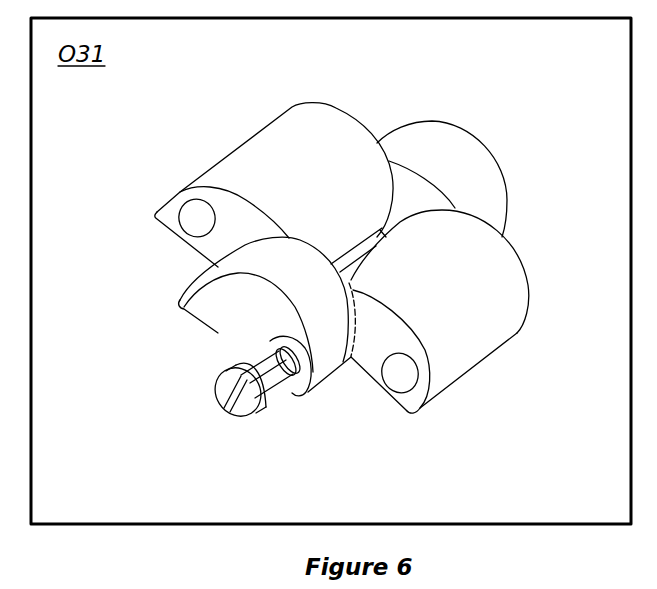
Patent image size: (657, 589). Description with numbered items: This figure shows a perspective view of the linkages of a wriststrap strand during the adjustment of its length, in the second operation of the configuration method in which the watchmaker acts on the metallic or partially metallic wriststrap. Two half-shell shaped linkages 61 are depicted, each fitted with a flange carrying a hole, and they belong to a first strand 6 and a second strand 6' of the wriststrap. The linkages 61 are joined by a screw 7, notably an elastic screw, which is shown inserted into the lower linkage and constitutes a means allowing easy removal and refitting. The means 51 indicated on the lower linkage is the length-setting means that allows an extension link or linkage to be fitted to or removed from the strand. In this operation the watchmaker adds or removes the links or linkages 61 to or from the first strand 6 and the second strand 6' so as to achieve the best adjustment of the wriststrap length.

The first strand of wriststrap 6 is at (274, 167).
The second strand of wriststrap 6' is at (353, 168).
The screw 7 is at (226, 391).
The means allowing an extension linkage or link to be fitted or removed 51 is at (152, 413).
The link or linkage 61 is at (472, 345).